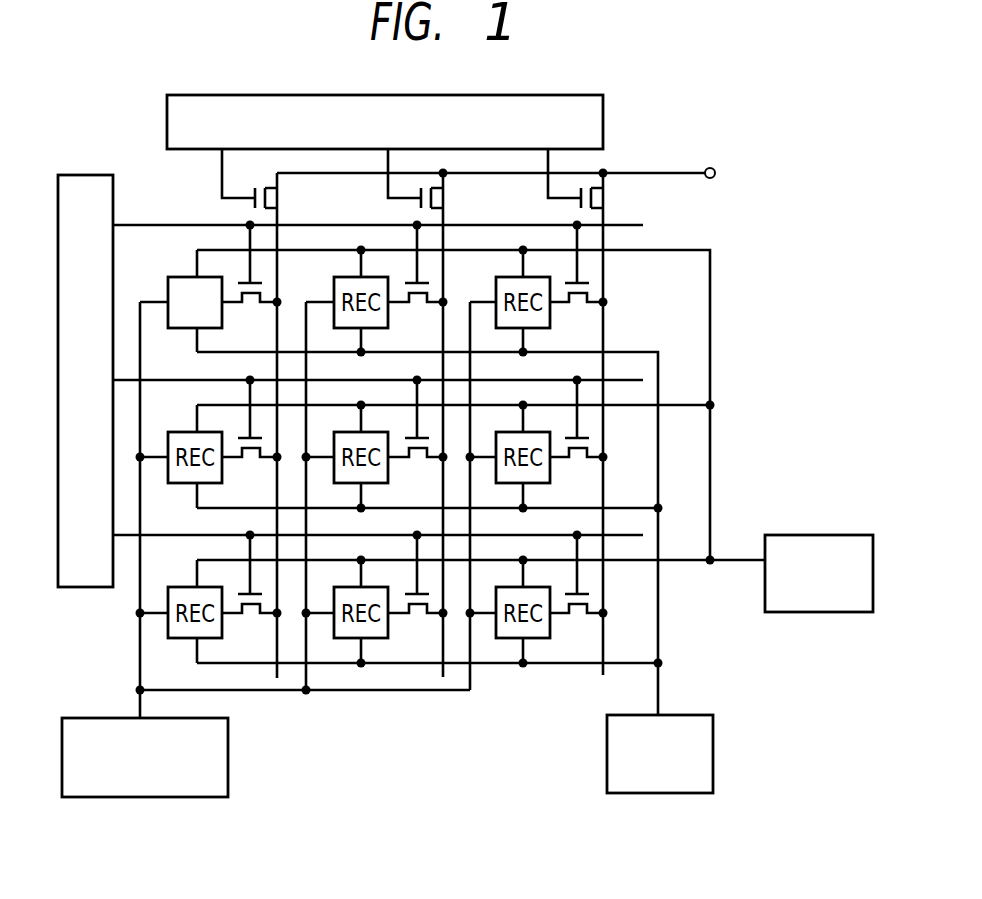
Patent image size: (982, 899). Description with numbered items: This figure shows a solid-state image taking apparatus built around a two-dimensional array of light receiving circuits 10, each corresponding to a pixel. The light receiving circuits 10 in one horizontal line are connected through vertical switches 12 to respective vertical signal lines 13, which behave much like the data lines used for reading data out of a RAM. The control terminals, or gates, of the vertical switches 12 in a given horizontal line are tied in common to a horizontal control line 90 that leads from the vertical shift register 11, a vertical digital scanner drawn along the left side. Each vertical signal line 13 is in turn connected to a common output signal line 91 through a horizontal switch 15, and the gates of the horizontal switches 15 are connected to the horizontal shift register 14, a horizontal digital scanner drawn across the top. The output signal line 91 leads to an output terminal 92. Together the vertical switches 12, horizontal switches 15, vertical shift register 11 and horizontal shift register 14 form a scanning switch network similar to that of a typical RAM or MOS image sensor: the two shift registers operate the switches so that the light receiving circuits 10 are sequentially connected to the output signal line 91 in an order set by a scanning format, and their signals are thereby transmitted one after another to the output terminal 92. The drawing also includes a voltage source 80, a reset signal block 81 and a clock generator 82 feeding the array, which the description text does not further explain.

The light receiving circuit 10 is at (183, 277).
The vertical shift register 11 is at (97, 173).
The vertical switch 12 is at (594, 290).
The vertical signal line 13 is at (594, 445).
The horizontal shift register 14 is at (606, 112).
The horizontal switch 15 is at (604, 199).
The voltage source 80 is at (229, 757).
The reset signal 81 is at (818, 535).
The clock generator 82 is at (714, 756).
The horizontal control line 90 is at (162, 224).
The output signal line 91 is at (651, 172).
The output terminal 92 is at (710, 167).